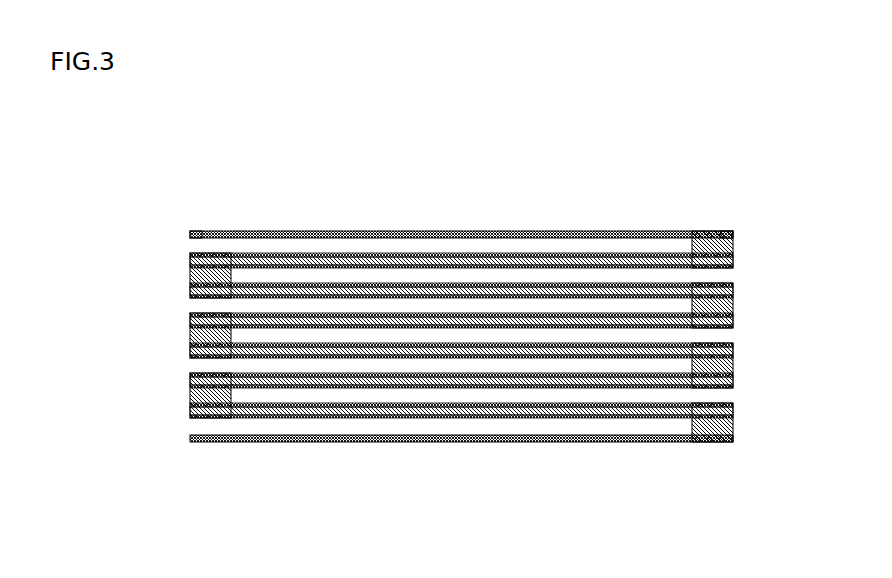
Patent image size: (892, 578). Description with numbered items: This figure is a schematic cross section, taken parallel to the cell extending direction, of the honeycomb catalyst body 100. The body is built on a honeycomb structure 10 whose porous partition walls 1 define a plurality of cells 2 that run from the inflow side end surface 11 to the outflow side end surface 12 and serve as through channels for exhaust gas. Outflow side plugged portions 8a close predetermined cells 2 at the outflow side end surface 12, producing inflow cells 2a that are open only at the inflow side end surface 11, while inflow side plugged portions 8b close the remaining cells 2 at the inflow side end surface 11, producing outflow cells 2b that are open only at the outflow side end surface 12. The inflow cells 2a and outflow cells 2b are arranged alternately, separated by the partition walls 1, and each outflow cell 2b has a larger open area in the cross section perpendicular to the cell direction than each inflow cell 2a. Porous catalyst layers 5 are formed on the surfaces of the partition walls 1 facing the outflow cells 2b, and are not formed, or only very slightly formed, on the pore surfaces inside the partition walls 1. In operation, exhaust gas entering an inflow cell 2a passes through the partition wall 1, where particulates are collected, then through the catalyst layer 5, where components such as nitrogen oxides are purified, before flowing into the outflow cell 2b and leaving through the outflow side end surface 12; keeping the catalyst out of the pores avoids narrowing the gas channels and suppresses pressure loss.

The honeycomb catalyst body 100 is at (798, 134).
The partition wall 1 is at (295, 253).
The cell 2 is at (461, 222).
The inflow cell 2a is at (418, 242).
The outflow cell 2b is at (612, 283).
The catalyst layer 5 is at (352, 256).
The outflow side plugged portion 8a is at (733, 305).
The inflow side plugged portion 8b is at (190, 405).
The honeycomb structure 10 is at (555, 441).
The inflow side end surface 11 is at (190, 232).
The outflow side end surface 12 is at (733, 233).